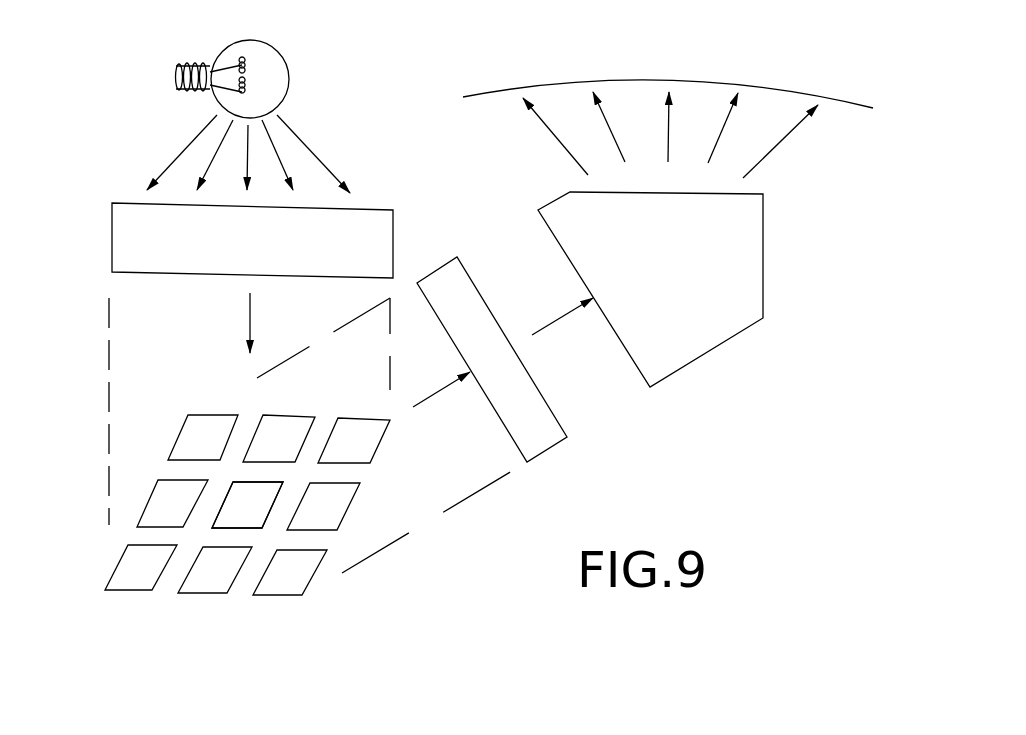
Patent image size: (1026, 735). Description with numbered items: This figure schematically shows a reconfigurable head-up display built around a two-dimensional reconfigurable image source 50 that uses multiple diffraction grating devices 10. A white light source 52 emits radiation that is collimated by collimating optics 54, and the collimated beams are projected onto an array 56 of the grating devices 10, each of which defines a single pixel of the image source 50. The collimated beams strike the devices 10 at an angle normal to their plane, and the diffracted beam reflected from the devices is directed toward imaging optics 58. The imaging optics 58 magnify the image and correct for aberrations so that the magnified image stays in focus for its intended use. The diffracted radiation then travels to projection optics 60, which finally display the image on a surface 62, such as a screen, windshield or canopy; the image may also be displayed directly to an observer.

The grating device 10 is at (337, 453).
The image source 50 is at (127, 123).
The white light source 52 is at (280, 65).
The collimating optics 54 is at (375, 222).
The array 56 is at (138, 425).
The imaging optics 58 is at (545, 437).
The projection optics 60 is at (748, 237).
The surface 62 is at (573, 85).